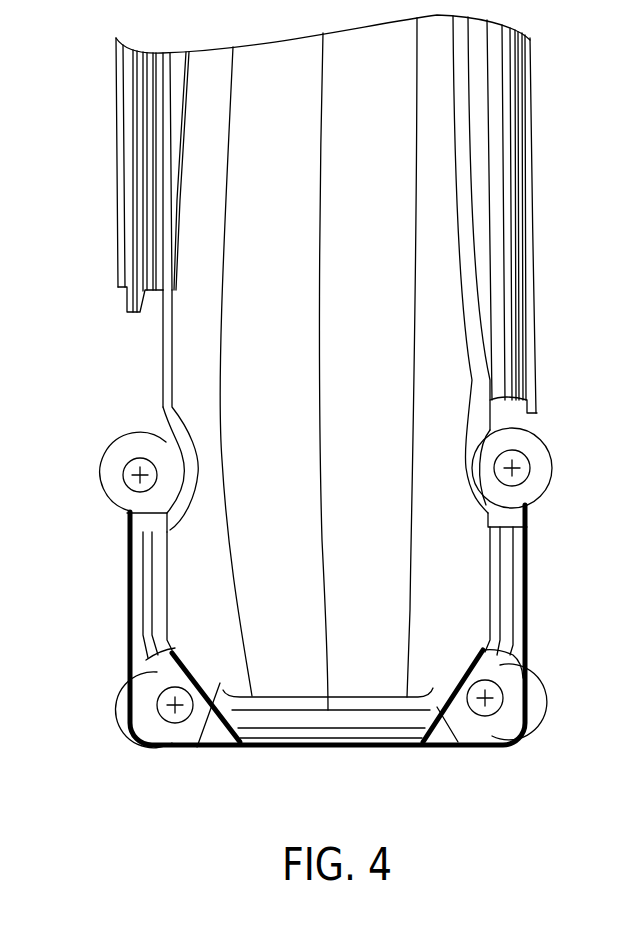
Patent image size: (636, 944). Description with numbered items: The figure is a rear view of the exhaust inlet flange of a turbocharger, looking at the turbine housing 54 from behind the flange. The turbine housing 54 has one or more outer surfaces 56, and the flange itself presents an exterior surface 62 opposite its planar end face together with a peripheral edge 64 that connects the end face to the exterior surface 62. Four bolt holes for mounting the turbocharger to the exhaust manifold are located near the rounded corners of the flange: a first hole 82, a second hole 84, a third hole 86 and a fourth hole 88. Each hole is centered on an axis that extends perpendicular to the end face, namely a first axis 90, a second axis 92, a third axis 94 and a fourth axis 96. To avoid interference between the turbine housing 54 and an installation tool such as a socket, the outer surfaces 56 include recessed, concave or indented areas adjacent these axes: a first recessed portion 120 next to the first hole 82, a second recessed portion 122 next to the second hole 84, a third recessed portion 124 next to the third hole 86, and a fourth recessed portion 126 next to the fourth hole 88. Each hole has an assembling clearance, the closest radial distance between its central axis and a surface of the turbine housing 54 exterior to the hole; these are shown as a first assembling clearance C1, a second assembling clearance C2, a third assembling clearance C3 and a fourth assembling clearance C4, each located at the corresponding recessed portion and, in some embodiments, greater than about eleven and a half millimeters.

The turbine housing 54 is at (406, 335).
The outer surfaces 56 is at (190, 358).
The exterior surface 62 is at (510, 593).
The peripheral edge 64 is at (528, 630).
The first hole 82 is at (195, 678).
The second hole 84 is at (488, 714).
The third hole 86 is at (125, 483).
The fourth hole 88 is at (528, 478).
The first axis 90 is at (157, 723).
The second axis 92 is at (497, 700).
The third axis 94 is at (172, 466).
The fourth axis 96 is at (482, 478).
The first recessed portion 120 is at (205, 740).
The second recessed portion 122 is at (445, 708).
The third recessed portion 124 is at (178, 452).
The fourth recessed portion 126 is at (484, 442).
The first assembling clearance C1 is at (196, 681).
The second assembling clearance C2 is at (472, 678).
The third assembling clearance C3 is at (126, 515).
The fourth assembling clearance C4 is at (530, 498).